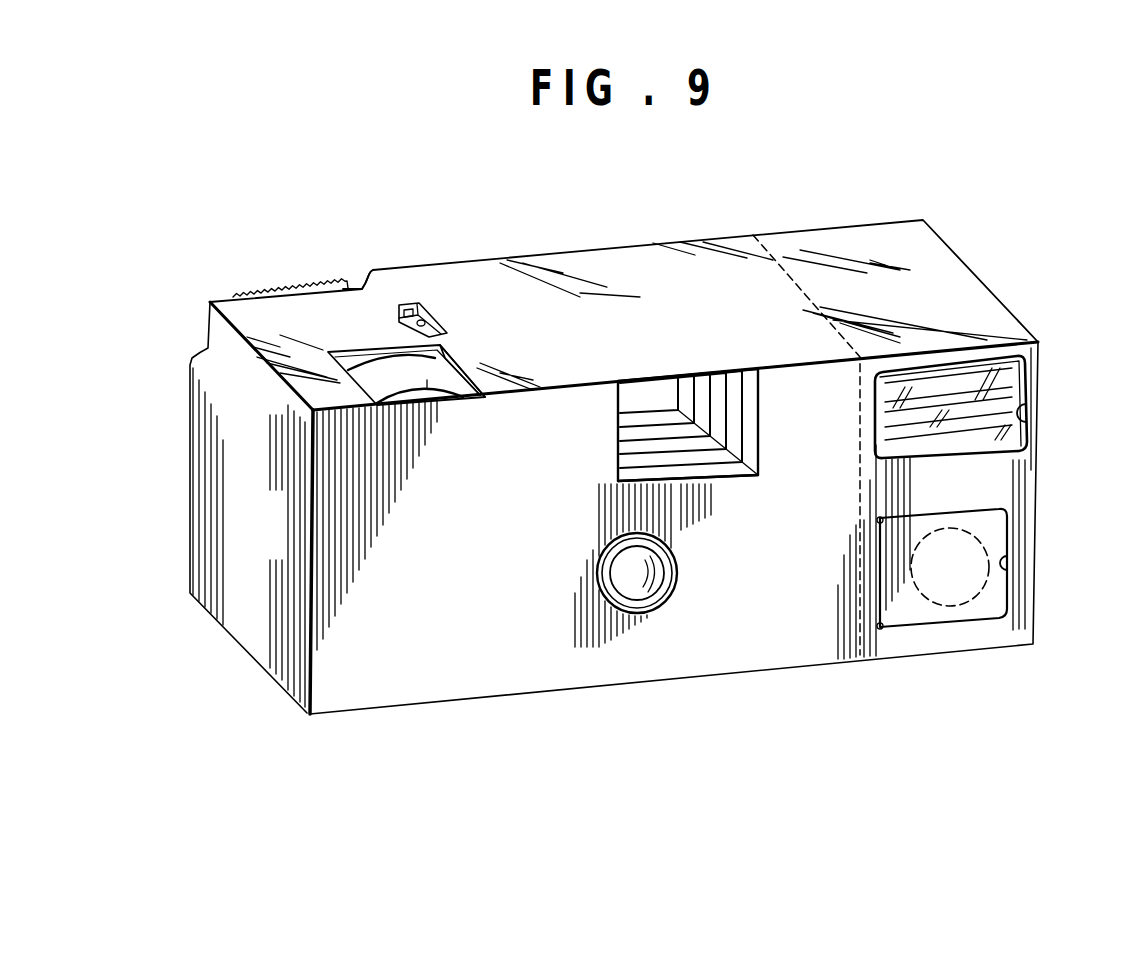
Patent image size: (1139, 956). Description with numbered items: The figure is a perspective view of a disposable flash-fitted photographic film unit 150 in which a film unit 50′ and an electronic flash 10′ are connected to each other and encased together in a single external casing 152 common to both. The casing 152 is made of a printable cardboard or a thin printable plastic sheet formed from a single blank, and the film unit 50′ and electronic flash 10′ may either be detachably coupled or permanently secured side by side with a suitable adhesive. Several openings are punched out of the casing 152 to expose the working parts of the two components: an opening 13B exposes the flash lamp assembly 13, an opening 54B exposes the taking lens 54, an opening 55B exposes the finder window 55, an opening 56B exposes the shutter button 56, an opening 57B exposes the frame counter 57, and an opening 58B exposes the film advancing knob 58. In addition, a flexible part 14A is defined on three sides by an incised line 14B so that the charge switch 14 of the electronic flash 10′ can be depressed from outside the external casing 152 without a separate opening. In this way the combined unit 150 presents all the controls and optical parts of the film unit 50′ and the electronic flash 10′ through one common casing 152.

The disposable flash-fitted photographic film unit 150 is at (567, 252).
The film unit 50′ is at (503, 273).
The electronic flash 10′ is at (973, 297).
The external casing 152 is at (333, 580).
The film advancing knob 58 is at (282, 280).
The opening 58B is at (350, 288).
The frame counter 57 is at (426, 303).
The opening 57B is at (398, 320).
The shutter button 56 is at (433, 407).
The opening 56B is at (457, 363).
The finder window 55 is at (697, 373).
The opening 55B is at (723, 477).
The taking lens 54 is at (647, 587).
The opening 54B is at (673, 590).
The flash lamp assembly 13 is at (1010, 380).
The opening 13B is at (1020, 417).
The flexible part 14A is at (997, 527).
The incised line 14B is at (1007, 573).
The charge switch 14 is at (948, 593).